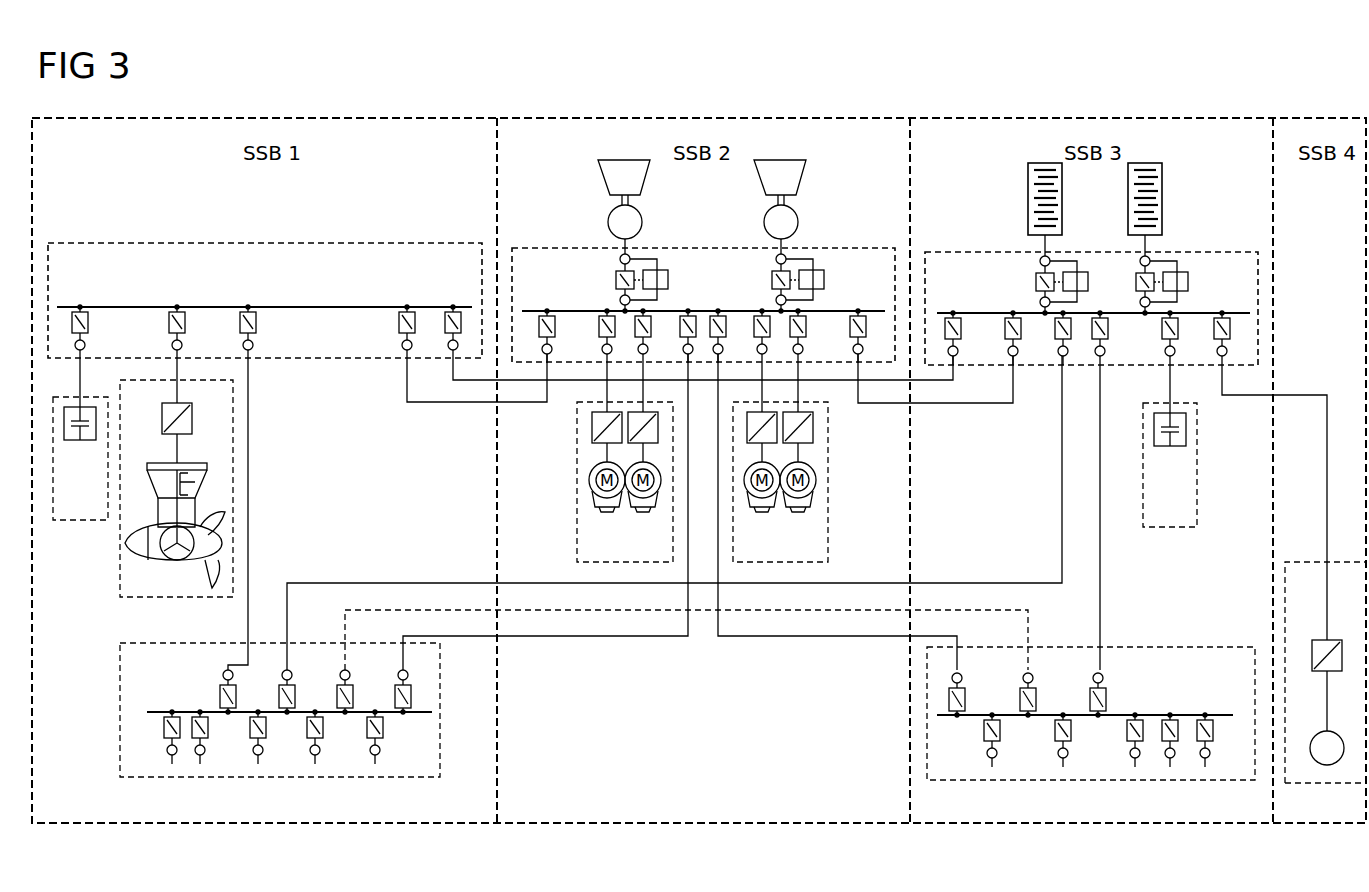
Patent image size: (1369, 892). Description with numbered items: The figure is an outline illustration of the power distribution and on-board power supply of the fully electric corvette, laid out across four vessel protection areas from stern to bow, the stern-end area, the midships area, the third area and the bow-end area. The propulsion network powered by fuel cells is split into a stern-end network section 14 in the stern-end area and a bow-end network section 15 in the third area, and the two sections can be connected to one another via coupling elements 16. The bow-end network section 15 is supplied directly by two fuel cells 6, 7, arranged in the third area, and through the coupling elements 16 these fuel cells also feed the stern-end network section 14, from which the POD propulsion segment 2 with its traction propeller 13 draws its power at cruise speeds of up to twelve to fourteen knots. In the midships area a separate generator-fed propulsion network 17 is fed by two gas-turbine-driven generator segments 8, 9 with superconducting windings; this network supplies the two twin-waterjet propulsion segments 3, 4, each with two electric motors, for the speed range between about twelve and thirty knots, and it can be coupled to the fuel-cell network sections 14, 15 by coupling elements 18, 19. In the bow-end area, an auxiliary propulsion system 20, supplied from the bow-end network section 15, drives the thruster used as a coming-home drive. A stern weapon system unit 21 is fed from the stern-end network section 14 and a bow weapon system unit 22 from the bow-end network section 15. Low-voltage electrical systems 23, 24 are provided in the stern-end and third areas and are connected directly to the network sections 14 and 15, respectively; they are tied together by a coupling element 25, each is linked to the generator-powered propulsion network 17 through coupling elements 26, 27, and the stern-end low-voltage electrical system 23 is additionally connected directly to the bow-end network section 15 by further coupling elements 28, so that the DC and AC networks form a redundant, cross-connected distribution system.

The POD propulsion segment 2 is at (197, 482).
The waterjet propulsion segment 3 is at (583, 543).
The waterjet propulsion segment 4 is at (822, 543).
The fuel-cell segment 6 is at (1030, 182).
The fuel-cell segment 7 is at (1128, 182).
The generator segment 8 is at (610, 220).
The generator segment 9 is at (766, 220).
The traction propeller 13 is at (215, 572).
The stern-end network section 14 is at (287, 252).
The bow-end network section 15 is at (1225, 257).
The coupling elements 16 is at (932, 385).
The generator-fed propulsion network 17 is at (867, 257).
The coupling elements 18 is at (448, 403).
The coupling elements 19 is at (988, 405).
The auxiliary propulsion system 20 is at (1345, 572).
The weapon system unit 21 is at (78, 513).
The weapon system unit 22 is at (1177, 517).
The low-voltage electrical system 23 is at (120, 700).
The low-voltage electrical system 24 is at (1207, 655).
The coupling element 25 is at (862, 612).
The coupling elements 26 is at (587, 638).
The coupling elements 27 is at (767, 638).
The coupling elements 28 is at (377, 580).